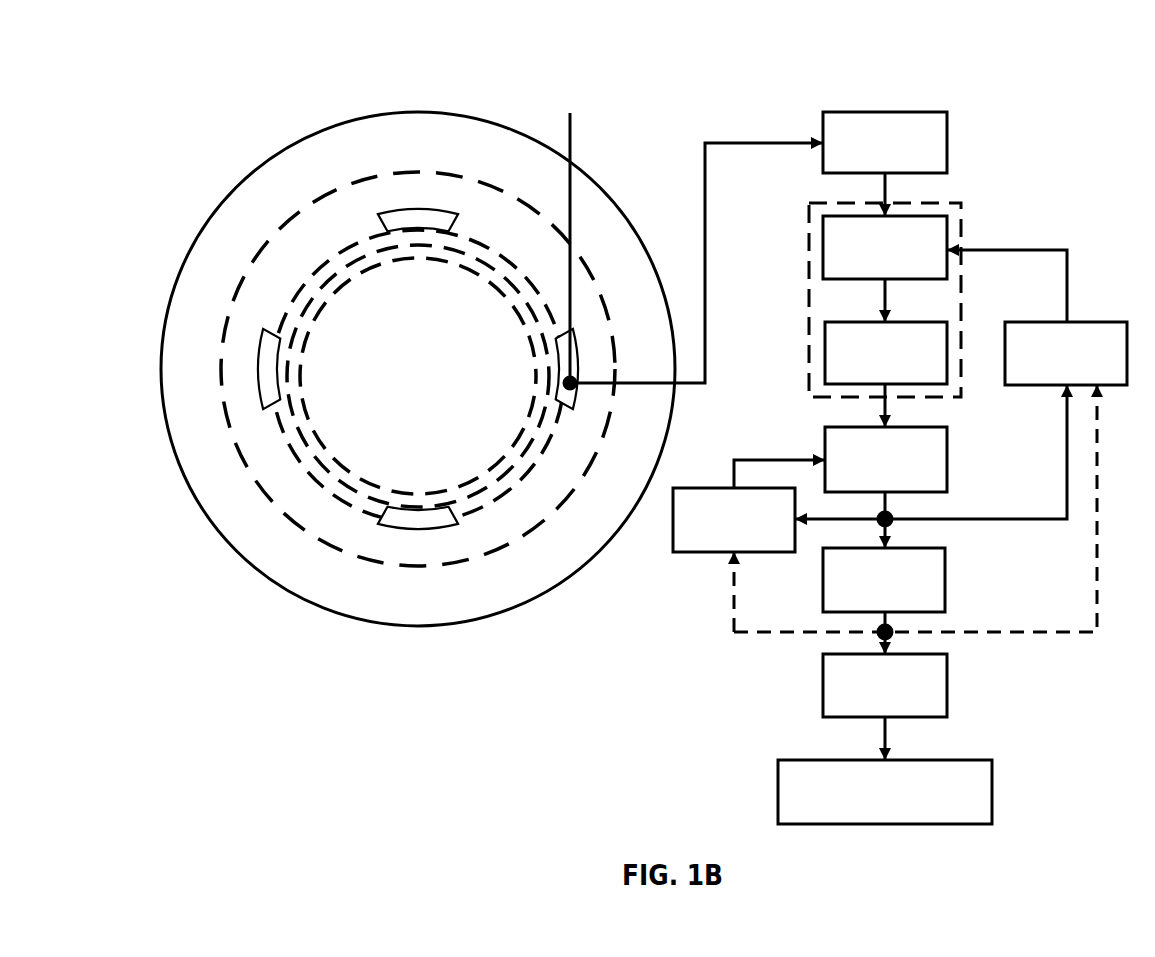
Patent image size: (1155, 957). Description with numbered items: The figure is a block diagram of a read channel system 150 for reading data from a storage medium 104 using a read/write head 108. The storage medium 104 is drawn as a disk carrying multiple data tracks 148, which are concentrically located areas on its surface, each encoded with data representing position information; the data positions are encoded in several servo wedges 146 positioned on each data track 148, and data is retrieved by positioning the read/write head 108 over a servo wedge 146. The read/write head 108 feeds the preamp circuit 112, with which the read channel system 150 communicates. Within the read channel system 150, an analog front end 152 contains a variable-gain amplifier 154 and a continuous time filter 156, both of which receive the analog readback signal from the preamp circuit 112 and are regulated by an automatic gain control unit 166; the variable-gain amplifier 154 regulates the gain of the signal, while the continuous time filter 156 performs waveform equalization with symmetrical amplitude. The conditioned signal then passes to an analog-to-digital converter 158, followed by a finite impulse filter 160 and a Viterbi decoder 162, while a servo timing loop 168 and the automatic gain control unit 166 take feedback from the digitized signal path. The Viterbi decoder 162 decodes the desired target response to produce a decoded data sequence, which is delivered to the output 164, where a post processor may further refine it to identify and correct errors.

The storage medium 104 is at (205, 196).
The read/write head 108 is at (570, 113).
The preamp circuit 112 is at (885, 142).
The servo wedges 146 is at (268, 345).
The data tracks 148 is at (267, 497).
The read channel system 150 is at (1036, 138).
The analog front end 152 is at (804, 241).
The variable-gain amplifier 154 is at (885, 247).
The continuous time filter 156 is at (886, 353).
The analog-to-digital converter 158 is at (886, 459).
The finite impulse filter 160 is at (884, 580).
The Viterbi decoder 162 is at (885, 685).
The output 164 is at (885, 792).
The automatic gain control unit 166 is at (1066, 353).
The servo timing loop 168 is at (734, 520).